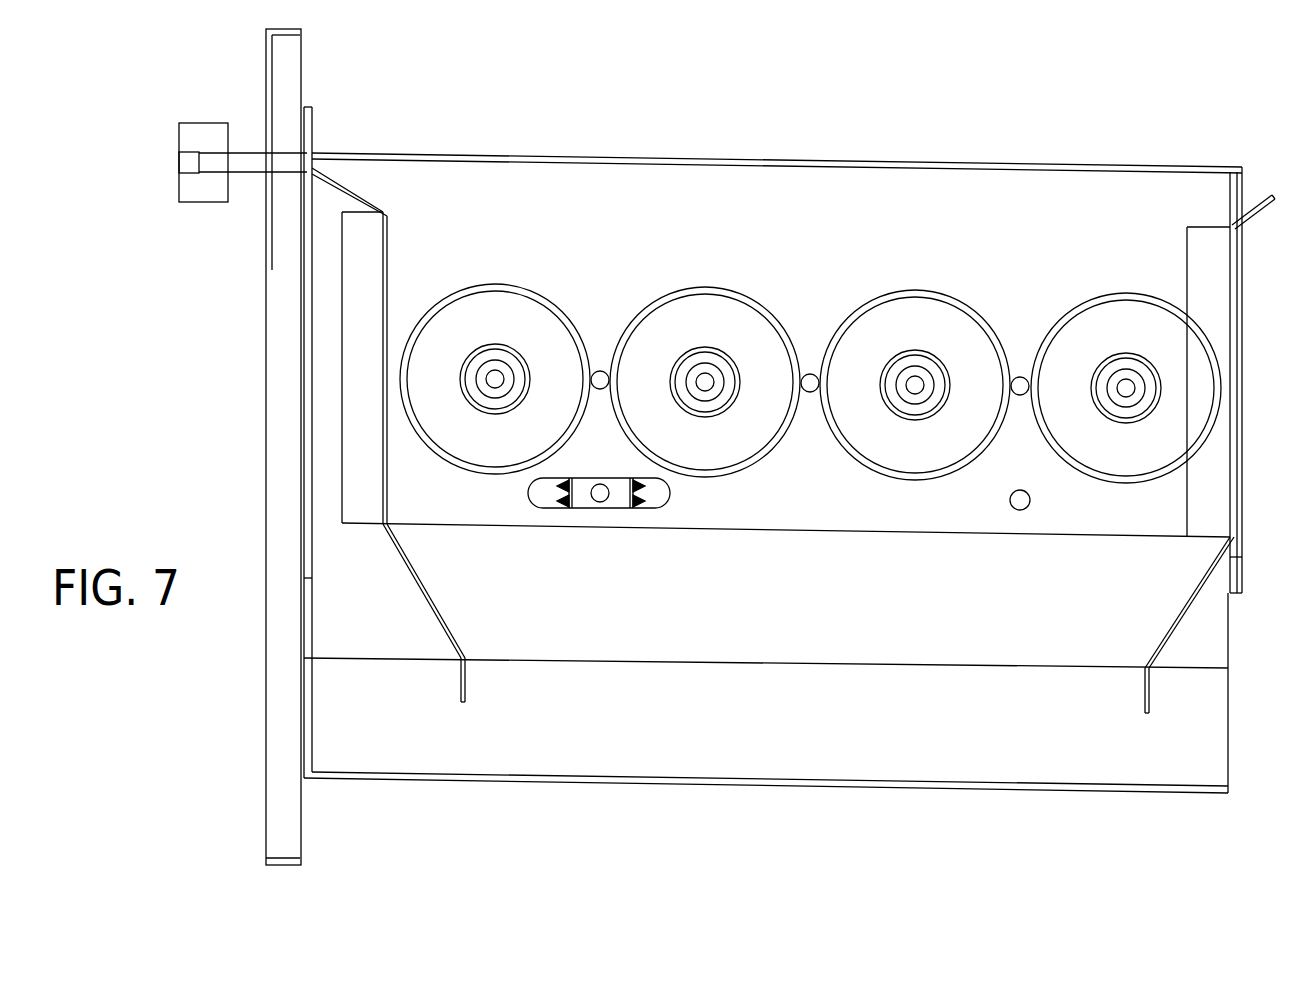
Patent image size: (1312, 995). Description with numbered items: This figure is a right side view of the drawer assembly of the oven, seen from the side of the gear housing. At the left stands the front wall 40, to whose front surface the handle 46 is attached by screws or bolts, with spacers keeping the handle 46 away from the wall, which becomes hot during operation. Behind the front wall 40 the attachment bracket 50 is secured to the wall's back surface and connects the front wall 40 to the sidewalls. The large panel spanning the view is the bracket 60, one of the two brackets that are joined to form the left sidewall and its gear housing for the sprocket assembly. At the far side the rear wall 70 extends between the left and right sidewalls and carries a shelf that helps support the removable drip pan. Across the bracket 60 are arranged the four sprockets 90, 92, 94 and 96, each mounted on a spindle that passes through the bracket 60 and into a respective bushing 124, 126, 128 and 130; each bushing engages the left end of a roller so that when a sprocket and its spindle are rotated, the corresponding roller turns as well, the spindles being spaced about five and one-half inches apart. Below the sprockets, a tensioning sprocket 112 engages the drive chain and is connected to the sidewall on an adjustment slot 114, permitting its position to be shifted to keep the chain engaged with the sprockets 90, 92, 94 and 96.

The front wall 40 is at (300, 725).
The handle 46 is at (179, 199).
The attachment bracket 50 is at (390, 225).
The bracket 60 is at (785, 192).
The rear wall 70 is at (1228, 250).
The sprocket 90 is at (1102, 293).
The sprocket 92 is at (902, 290).
The sprocket 94 is at (695, 287).
The sprocket 96 is at (508, 283).
The tensioning sprocket 112 is at (558, 492).
The adjustment slot 114 is at (665, 500).
The bushing 124 is at (1108, 370).
The bushing 126 is at (898, 363).
The bushing 128 is at (688, 363).
The bushing 130 is at (482, 353).